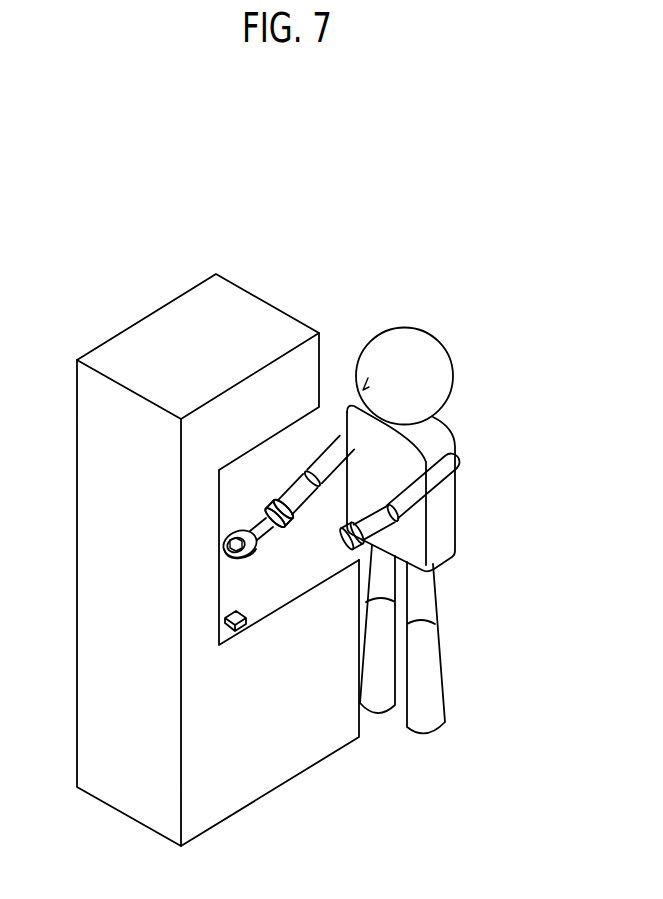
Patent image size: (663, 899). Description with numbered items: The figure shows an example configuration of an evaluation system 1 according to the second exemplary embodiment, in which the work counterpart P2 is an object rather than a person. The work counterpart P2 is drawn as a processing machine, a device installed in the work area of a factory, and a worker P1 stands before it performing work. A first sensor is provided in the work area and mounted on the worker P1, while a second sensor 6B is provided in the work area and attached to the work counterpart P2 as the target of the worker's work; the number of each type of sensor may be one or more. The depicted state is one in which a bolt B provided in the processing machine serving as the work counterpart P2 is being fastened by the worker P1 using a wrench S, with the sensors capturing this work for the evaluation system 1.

The evaluation system 1 is at (364, 228).
The worker P1 is at (445, 340).
The work counterpart P2 is at (158, 310).
The wrench S is at (227, 535).
The bolt B is at (223, 556).
The second sensor 6B is at (241, 630).